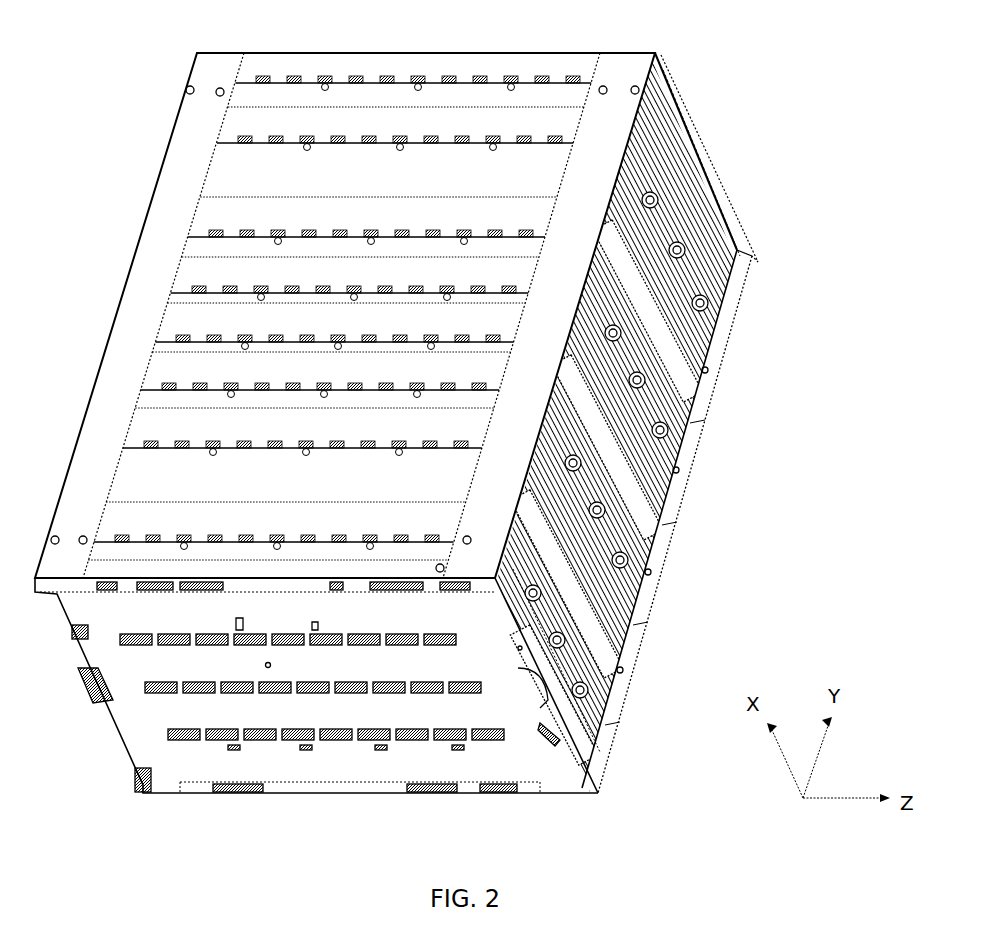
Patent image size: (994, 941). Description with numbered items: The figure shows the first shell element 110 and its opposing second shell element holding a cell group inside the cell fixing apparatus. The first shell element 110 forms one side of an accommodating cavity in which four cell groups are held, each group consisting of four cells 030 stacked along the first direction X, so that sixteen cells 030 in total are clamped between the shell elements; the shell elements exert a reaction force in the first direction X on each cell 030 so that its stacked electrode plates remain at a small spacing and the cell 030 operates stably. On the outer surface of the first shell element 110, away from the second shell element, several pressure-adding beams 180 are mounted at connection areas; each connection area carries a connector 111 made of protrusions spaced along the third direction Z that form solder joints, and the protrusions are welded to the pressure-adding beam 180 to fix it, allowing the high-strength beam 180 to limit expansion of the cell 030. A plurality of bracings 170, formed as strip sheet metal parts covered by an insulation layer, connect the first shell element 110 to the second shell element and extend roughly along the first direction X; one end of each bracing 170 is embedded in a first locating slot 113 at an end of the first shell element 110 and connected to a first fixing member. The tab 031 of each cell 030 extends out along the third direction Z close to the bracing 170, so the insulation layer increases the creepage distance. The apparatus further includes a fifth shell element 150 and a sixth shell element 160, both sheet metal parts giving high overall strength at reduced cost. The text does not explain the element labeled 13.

The first shell element 110 is at (620, 60).
The connector 111 is at (217, 169).
The first locating slot 113 is at (697, 160).
The sixth shell element 160 is at (663, 92).
The pressure-adding beam 180 is at (400, 113).
The tab 031 is at (712, 299).
The bracing 170 is at (720, 397).
The side frame 13 is at (638, 658).
The cell 030 is at (590, 737).
The fifth shell element 150 is at (532, 772).